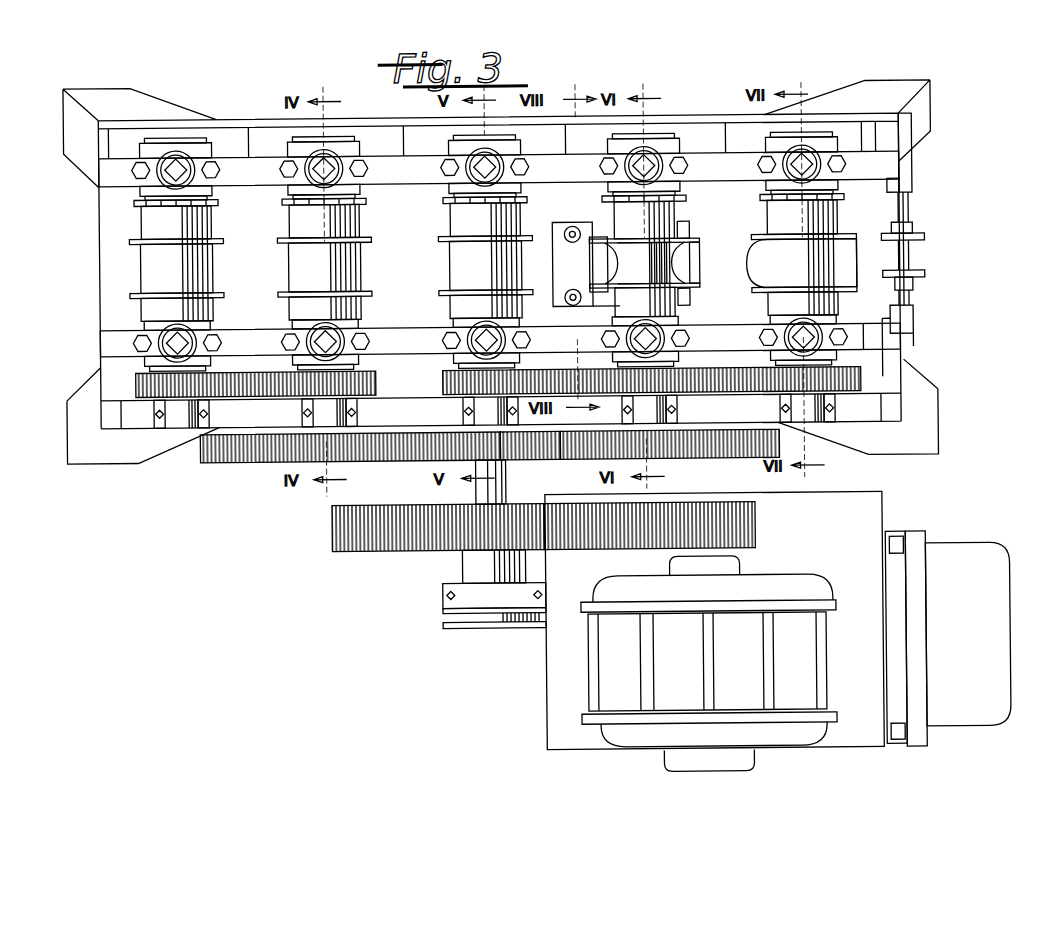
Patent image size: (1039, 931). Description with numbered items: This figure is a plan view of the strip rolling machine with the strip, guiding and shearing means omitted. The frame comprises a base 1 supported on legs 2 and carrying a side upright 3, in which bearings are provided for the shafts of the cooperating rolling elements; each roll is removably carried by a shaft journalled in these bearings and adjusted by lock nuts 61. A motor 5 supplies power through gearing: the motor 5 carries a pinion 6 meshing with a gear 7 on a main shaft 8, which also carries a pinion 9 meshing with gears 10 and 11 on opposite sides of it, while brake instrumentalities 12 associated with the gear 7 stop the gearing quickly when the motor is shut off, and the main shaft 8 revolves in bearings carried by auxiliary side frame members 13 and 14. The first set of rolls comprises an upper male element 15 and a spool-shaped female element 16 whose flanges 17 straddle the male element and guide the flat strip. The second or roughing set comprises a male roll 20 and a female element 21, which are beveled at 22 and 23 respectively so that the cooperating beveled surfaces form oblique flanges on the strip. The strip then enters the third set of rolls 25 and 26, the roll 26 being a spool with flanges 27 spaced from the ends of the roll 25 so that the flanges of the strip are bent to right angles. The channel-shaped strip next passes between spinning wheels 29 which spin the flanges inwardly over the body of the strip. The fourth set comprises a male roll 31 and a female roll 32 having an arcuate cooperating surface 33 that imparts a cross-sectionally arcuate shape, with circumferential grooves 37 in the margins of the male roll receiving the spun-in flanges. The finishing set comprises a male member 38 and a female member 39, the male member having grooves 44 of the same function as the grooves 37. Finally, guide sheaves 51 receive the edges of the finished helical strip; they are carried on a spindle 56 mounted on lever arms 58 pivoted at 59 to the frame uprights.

The base 1 is at (870, 165).
The legs 2 is at (88, 175).
The side upright 3 is at (875, 325).
The motor 5 is at (795, 590).
The pinion 6 is at (745, 524).
The gear 7 is at (330, 528).
The main shaft 8 is at (474, 495).
The pinion 9 is at (520, 460).
The gear 10 is at (250, 461).
The gear 11 is at (745, 460).
The brake instrumentalities 12 is at (437, 598).
The auxiliary side frame member 13 is at (850, 414).
The auxiliary side frame member 14 is at (458, 588).
The upper male element 15 is at (146, 255).
The female element 16 is at (140, 298).
The flanges 17 is at (222, 240).
The male roll 20 is at (362, 255).
The female element 21 is at (362, 311).
The beveled surface 22 is at (298, 243).
The beveled surface 23 is at (372, 238).
The roll 25 is at (440, 240).
The roll 26 is at (445, 297).
The flanges 27 is at (522, 240).
The spinning wheels 29 is at (575, 226).
The male roll 31 is at (700, 250).
The female roll 32 is at (690, 232).
The arcuate cooperating surface 33 is at (690, 262).
The circumferential grooves 37 is at (630, 282).
The male member 38 is at (858, 262).
The female member 39 is at (762, 293).
The grooves 44 is at (790, 245).
The guide sheaves 51 is at (920, 238).
The spindle 56 is at (912, 262).
The lever arms 58 is at (888, 189).
The pivot 59 is at (914, 178).
The lock nuts 61 is at (222, 200).